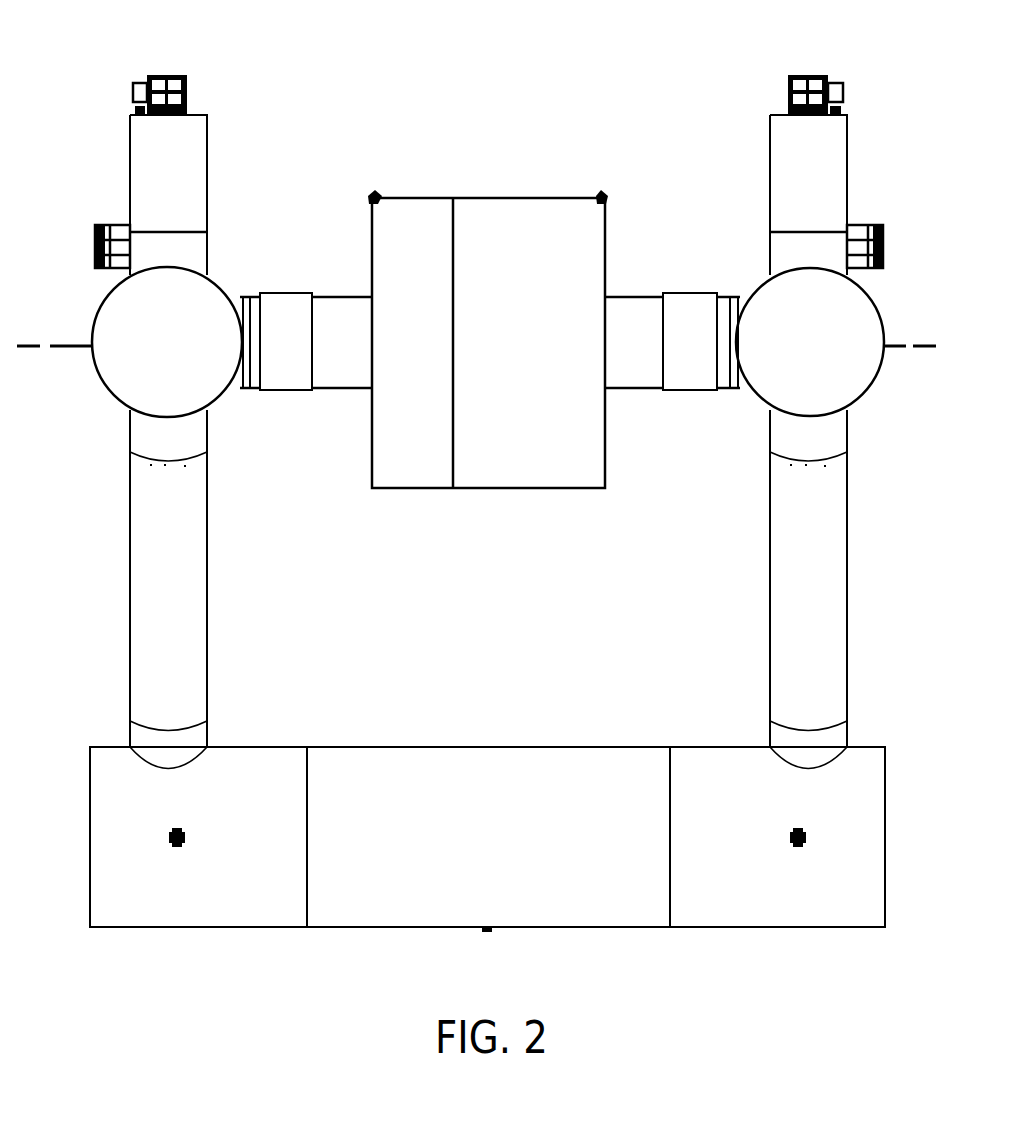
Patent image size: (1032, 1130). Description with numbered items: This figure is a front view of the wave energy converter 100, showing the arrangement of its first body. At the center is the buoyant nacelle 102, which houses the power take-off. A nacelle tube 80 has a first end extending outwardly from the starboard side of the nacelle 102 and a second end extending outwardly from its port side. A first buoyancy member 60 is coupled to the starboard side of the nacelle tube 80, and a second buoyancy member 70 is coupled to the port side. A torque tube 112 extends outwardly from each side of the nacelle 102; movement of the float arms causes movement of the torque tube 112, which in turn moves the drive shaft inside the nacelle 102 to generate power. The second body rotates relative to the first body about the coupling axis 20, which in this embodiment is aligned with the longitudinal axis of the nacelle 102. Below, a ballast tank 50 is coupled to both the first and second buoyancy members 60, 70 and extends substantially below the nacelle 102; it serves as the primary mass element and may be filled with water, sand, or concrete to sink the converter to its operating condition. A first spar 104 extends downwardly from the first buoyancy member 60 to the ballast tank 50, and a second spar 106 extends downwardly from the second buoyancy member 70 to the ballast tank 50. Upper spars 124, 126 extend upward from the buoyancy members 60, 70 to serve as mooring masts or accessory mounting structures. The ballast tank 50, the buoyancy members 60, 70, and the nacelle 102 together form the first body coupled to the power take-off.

The wave energy converter 100 is at (480, 52).
The coupling axis 20 is at (919, 345).
The ballast tank 50 is at (504, 852).
The first buoyancy member 60 is at (182, 358).
The second buoyancy member 70 is at (825, 358).
The nacelle tube 80 is at (238, 300).
The nacelle 102 is at (528, 210).
The first spar 104 is at (135, 577).
The second spar 106 is at (840, 576).
The torque tube 112 is at (338, 380).
The upper spar 124 is at (133, 177).
The upper spar 126 is at (838, 177).